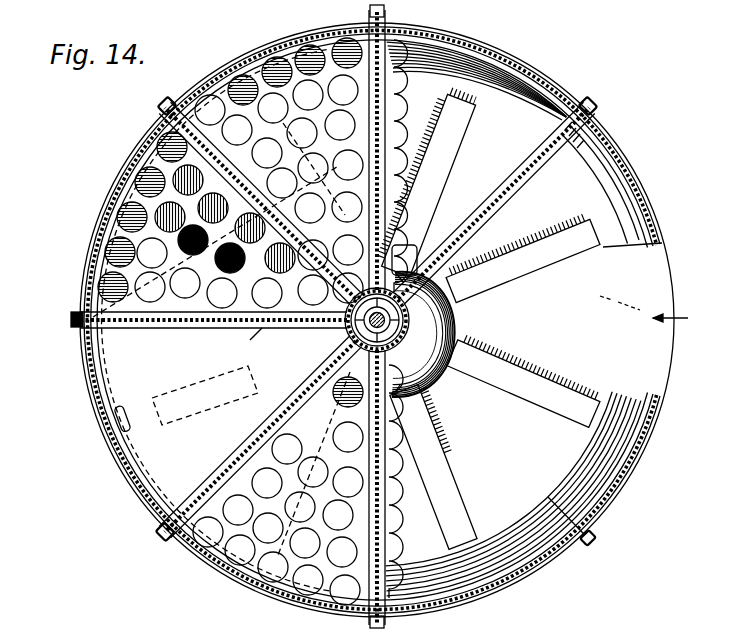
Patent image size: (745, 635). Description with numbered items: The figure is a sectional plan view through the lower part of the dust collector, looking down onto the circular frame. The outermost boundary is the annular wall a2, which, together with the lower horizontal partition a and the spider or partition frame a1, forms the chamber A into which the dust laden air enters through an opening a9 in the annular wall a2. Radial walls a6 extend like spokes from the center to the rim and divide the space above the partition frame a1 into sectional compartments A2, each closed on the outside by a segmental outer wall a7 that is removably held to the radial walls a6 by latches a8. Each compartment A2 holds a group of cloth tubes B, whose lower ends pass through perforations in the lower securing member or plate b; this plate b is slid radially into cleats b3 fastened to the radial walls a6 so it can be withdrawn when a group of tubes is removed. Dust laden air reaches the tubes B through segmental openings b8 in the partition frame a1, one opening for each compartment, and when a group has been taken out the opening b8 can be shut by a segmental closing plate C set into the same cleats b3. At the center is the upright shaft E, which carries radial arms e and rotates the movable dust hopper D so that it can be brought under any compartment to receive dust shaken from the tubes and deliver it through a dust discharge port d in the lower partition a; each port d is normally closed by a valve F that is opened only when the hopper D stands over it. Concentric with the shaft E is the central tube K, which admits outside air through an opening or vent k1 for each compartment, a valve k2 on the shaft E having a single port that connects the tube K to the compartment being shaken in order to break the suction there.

The chamber A is at (648, 386).
The sectional compartments A2 is at (275, 55).
The lower horizontal partition a is at (586, 315).
The spider or partition frame a1 is at (559, 105).
The annular wall a2 is at (458, 58).
The radial walls a6 is at (385, 194).
The segmental outer wall a7 is at (523, 70).
The latches a8 is at (160, 106).
The opening a9 is at (660, 270).
The tubes B is at (216, 175).
The lower securing member or plate b is at (362, 108).
The cleats b3 is at (390, 38).
The segmental openings b8 is at (575, 138).
The segmental closing plate C is at (122, 390).
The movable dust hopper or passage D is at (261, 342).
The dust discharge port or opening d is at (522, 232).
The central upright shaft E is at (430, 320).
The radial arms e is at (415, 385).
The valves F is at (492, 272).
The central tube K is at (345, 328).
The opening or vent k1 is at (404, 262).
The valve k2 is at (221, 339).